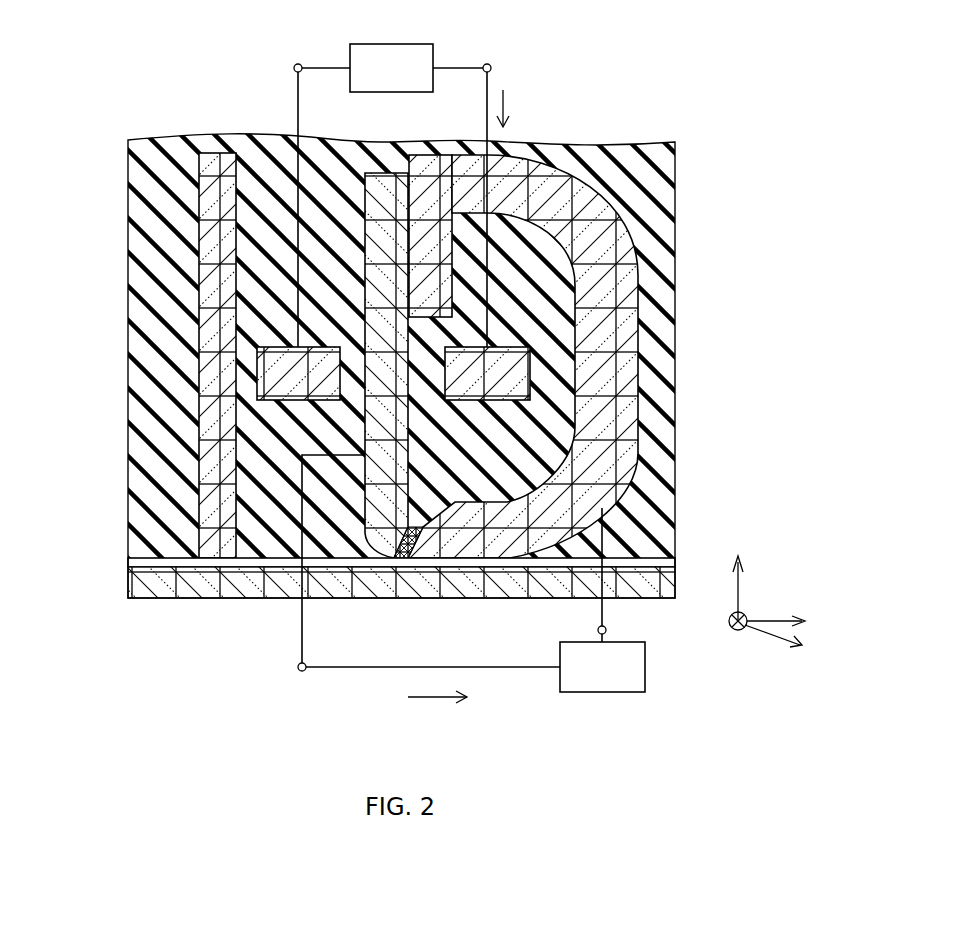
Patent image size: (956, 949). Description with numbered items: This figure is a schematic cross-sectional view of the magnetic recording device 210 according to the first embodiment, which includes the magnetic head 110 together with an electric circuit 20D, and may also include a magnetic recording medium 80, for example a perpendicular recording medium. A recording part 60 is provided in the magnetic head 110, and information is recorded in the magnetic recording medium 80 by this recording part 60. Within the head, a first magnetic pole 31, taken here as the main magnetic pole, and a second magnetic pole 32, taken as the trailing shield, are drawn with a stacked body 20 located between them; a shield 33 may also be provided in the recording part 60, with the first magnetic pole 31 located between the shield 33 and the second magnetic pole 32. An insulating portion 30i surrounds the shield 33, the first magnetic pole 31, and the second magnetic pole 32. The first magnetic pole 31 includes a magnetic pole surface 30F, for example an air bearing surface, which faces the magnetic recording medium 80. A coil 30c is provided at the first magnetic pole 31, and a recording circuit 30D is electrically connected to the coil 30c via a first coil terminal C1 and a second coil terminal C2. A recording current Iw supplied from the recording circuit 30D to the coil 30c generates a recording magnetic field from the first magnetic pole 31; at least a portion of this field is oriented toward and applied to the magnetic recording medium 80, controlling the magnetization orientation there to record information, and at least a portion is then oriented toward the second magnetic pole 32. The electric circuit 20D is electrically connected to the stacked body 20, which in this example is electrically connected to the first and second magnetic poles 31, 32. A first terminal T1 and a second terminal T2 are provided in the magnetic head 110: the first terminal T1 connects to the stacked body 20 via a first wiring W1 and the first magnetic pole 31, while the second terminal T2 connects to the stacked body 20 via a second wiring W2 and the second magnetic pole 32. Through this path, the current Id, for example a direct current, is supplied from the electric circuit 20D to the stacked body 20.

The magnetic recording device 210 is at (451, 377).
The magnetic head 110 is at (400, 355).
The recording part 60 is at (675, 106).
The insulating portion 30i is at (266, 310).
The coil 30c is at (262, 371).
The first magnetic pole 31 is at (385, 188).
The second magnetic pole 32 is at (622, 457).
The shield 33 is at (210, 478).
The magnetic pole surface 30F is at (388, 562).
The stacked body 20 is at (402, 565).
The magnetic recording medium 80 is at (140, 580).
The recording circuit 30D is at (433, 52).
The electric circuit 20D is at (646, 667).
The first coil terminal C1 is at (294, 68).
The second coil terminal C2 is at (491, 68).
The first terminal T1 is at (298, 667).
The second terminal T2 is at (606, 630).
The first wiring W1 is at (300, 632).
The second wiring W2 is at (598, 630).
The recording current Iw is at (508, 108).
The current Id is at (430, 697).